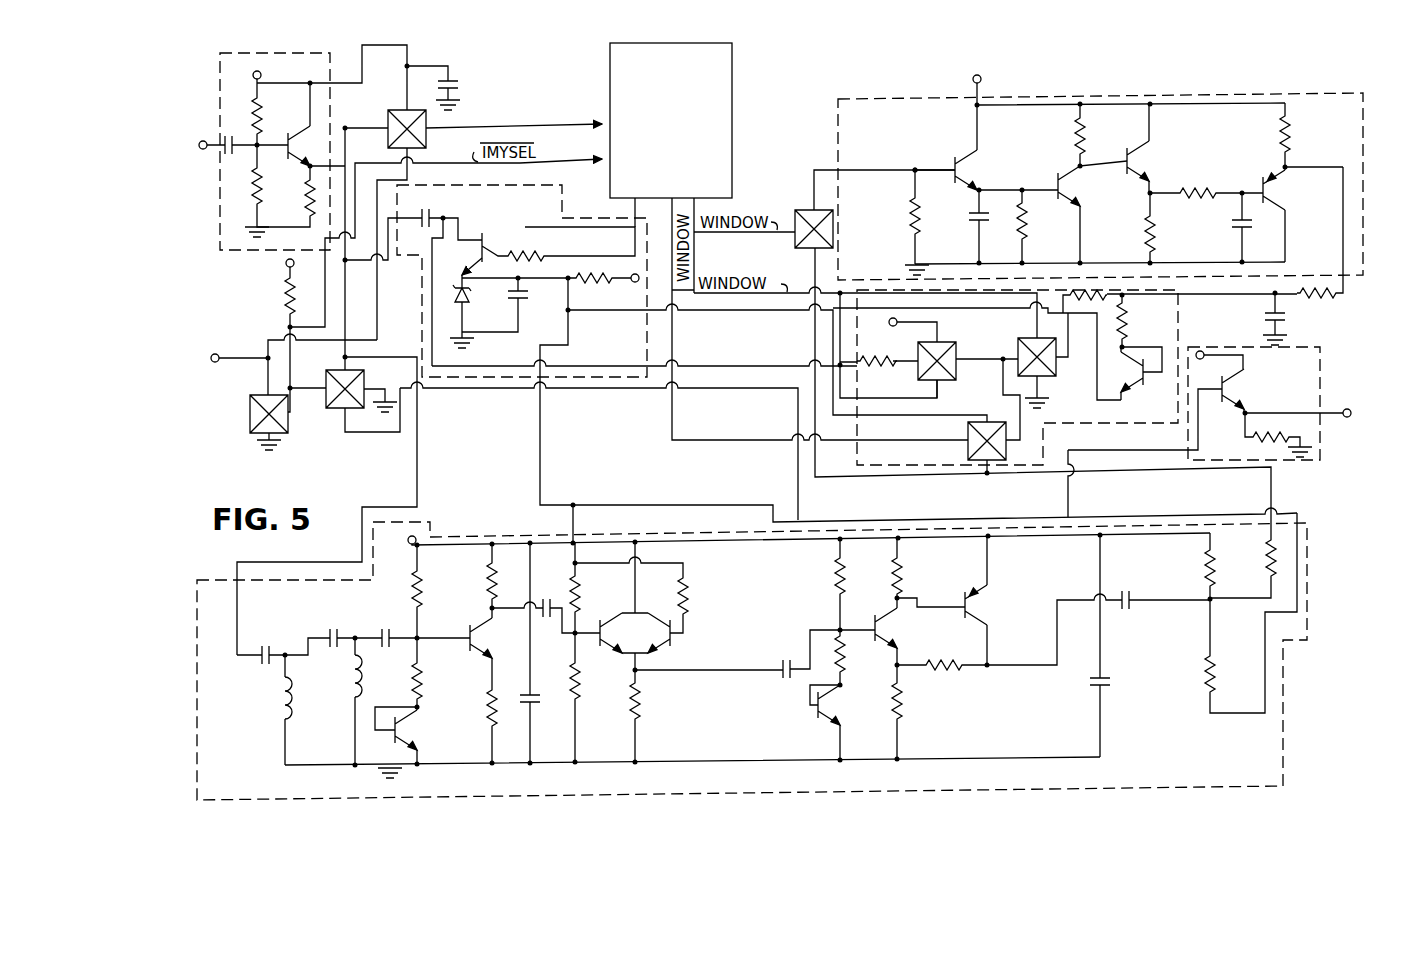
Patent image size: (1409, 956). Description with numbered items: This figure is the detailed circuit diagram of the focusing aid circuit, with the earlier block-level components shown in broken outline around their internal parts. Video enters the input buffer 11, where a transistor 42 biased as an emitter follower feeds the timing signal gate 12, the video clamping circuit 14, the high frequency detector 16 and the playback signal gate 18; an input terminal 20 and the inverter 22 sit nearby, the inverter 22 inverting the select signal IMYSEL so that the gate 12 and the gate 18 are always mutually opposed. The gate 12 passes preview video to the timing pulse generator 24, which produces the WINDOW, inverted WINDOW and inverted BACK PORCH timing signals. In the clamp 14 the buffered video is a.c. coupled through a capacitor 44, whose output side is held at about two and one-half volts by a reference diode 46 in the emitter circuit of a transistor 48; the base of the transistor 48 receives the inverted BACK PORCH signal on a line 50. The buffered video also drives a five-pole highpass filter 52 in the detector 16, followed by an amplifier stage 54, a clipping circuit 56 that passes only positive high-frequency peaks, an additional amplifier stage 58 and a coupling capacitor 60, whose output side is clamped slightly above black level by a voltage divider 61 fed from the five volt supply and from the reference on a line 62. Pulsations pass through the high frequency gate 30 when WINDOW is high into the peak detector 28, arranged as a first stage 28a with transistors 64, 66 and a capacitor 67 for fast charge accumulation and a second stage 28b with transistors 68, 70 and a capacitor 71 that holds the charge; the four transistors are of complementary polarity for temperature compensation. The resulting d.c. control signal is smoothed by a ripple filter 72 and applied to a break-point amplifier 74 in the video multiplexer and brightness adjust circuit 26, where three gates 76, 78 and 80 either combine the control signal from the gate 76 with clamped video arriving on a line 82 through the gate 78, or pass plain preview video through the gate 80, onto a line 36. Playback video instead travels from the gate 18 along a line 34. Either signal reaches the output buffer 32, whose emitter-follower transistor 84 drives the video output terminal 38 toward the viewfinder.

The input buffer 11 is at (330, 56).
The timing signal gate 12 is at (427, 142).
The video clamping circuit 14 is at (566, 211).
The high frequency detector 16 is at (436, 538).
The playback signal gate 18 is at (365, 377).
The input terminal 20 is at (247, 356).
The inverter 22 is at (288, 429).
The timing pulse generator 24 is at (733, 96).
The video multiplexer and brightness adjust circuit 26 is at (1078, 426).
The peak detector 28 is at (1354, 277).
The first stage of peak detector 28a is at (1046, 143).
The second stage of peak detector 28b is at (1246, 143).
The high frequency gate 30 is at (800, 210).
The output buffer 32 is at (1320, 358).
The line 34 is at (795, 463).
The line 36 is at (992, 481).
The video output terminal 38 is at (1332, 418).
The transistor 42 is at (307, 161).
The capacitor 44 is at (435, 217).
The reference diode 46 is at (468, 306).
The transistor 48 is at (487, 244).
The line 50 is at (612, 200).
The five-pole highpass filter 52 is at (306, 624).
The amplifier stage 54 is at (483, 657).
The clipping circuit 56 is at (697, 647).
The amplifier stage 58 is at (921, 592).
The capacitor 60 is at (1130, 604).
The voltage divider 61 is at (1201, 632).
The line 62 is at (1265, 621).
The transistor 64 is at (953, 155).
The transistor 66 is at (1072, 200).
The capacitor 67 is at (985, 225).
The transistor 68 is at (1137, 181).
The transistor 70 is at (1261, 186).
The capacitor 71 is at (1237, 221).
The ripple filter 72 is at (1341, 335).
The break-point amplifier 74 is at (1165, 335).
The gate 76 is at (1050, 376).
The gate 78 is at (957, 352).
The gate 80 is at (1000, 422).
The line 82 is at (761, 363).
The transistor 84 is at (1227, 403).